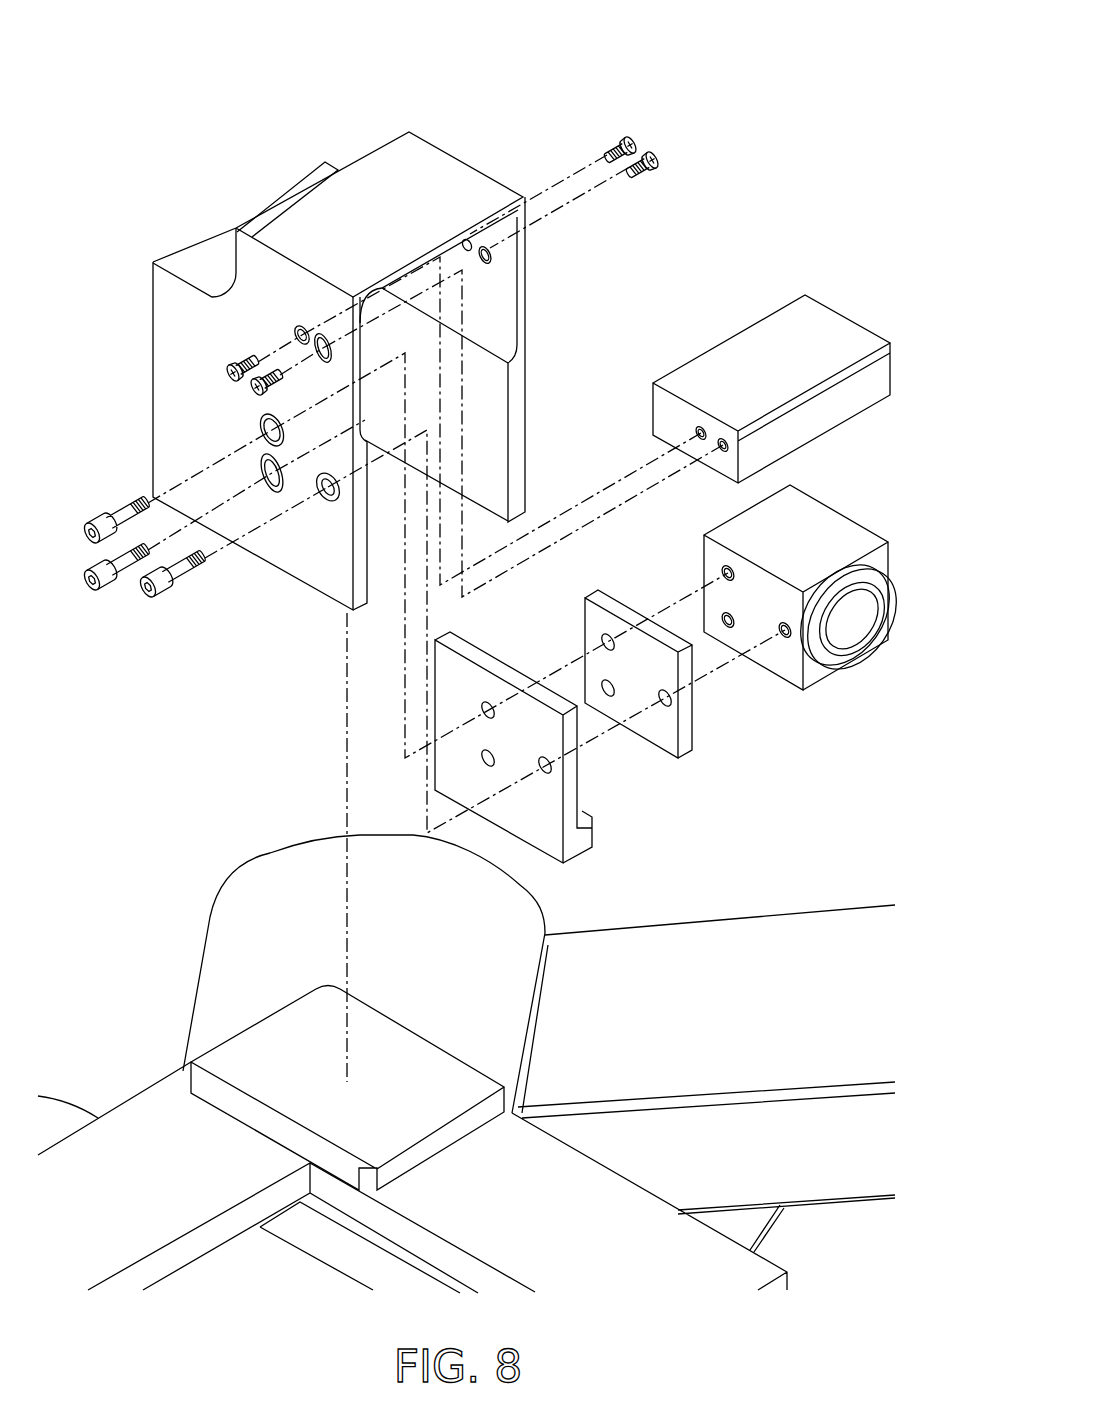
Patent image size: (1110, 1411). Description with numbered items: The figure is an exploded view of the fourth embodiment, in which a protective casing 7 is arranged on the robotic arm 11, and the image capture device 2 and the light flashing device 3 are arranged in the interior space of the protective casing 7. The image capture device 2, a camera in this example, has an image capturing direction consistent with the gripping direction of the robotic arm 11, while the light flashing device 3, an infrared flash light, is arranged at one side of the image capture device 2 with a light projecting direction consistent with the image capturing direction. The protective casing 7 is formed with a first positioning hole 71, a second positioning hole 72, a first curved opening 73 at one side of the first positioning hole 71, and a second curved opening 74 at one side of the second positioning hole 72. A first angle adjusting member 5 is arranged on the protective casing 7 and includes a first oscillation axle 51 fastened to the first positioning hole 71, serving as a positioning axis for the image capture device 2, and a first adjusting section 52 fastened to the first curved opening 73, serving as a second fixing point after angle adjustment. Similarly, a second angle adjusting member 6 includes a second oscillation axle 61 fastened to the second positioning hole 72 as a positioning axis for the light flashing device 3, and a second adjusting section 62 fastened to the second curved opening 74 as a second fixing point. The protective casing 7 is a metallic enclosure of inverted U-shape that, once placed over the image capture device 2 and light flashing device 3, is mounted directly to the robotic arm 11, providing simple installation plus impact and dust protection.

The image capture device 2 is at (820, 677).
The light flashing device 3 is at (762, 318).
The first angle adjusting member 5 is at (183, 683).
The first oscillation axle 51 is at (163, 597).
The first adjusting section 52 is at (88, 592).
The second angle adjusting member 6 is at (87, 328).
The second oscillation axle 61 is at (228, 366).
The second adjusting section 62 is at (253, 392).
The protective casing 7 is at (373, 150).
The first positioning hole 71 is at (328, 500).
The second positioning hole 72 is at (298, 328).
The first curved opening 73 is at (272, 493).
The second curved opening 74 is at (320, 340).
The robotic arm 11 is at (145, 1088).